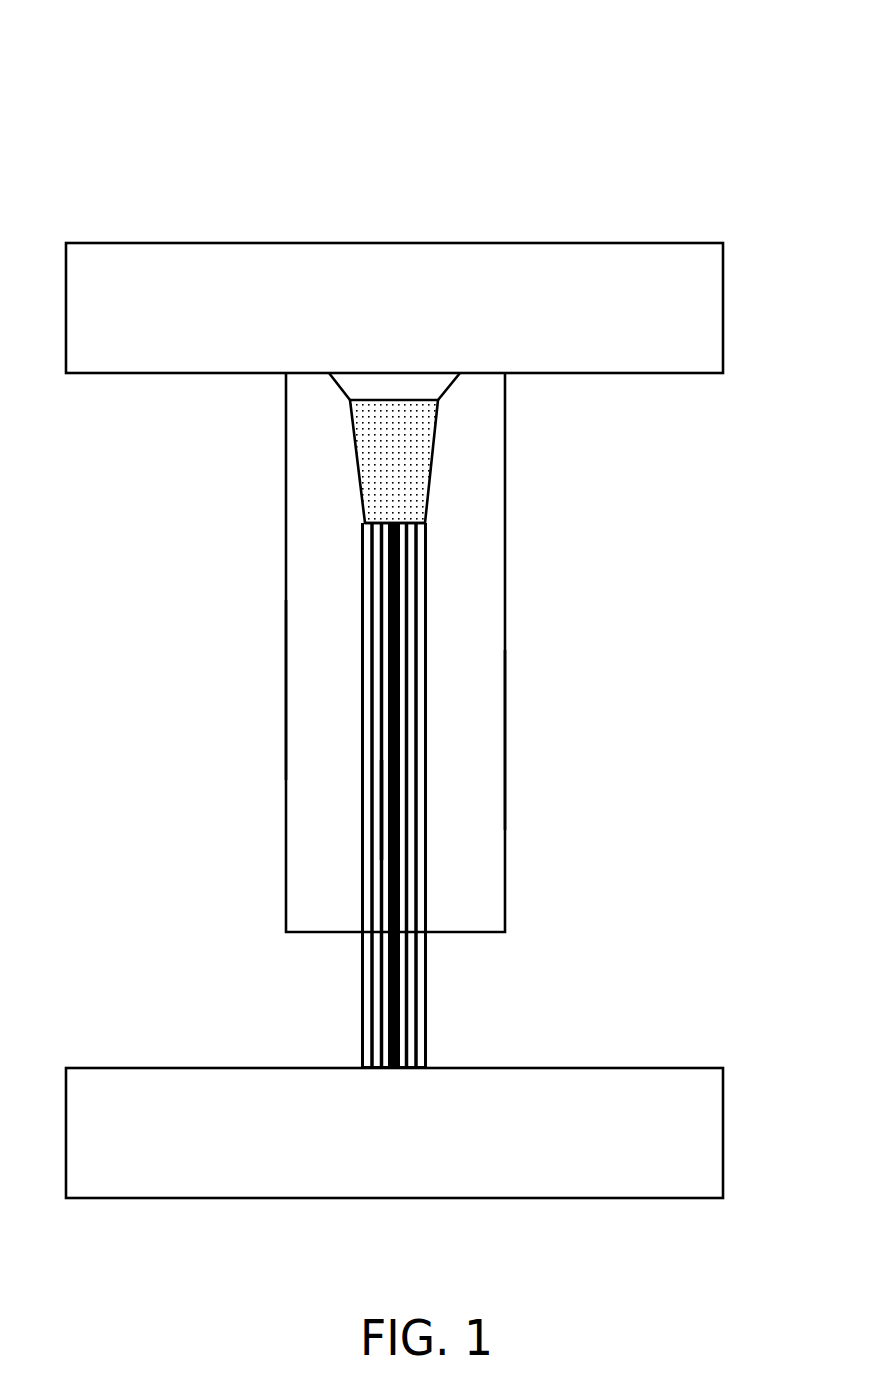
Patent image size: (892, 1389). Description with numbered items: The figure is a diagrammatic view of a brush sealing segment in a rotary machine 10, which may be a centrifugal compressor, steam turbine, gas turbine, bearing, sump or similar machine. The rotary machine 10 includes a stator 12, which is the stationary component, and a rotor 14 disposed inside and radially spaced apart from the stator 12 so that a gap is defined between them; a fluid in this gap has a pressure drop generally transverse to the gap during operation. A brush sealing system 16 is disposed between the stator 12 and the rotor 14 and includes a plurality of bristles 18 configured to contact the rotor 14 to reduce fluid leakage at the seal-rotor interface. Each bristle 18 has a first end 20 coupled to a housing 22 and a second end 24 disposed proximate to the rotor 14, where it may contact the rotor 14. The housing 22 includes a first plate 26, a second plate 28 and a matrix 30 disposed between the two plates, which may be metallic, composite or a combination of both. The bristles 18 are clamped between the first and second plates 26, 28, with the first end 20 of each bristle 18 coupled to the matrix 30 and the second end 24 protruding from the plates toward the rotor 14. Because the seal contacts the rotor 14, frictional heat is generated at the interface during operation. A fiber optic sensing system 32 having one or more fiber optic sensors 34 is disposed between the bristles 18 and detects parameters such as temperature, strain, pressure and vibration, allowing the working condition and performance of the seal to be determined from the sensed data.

The rotary machine 10 is at (677, 73).
The stator 12 is at (710, 279).
The rotor 14 is at (710, 1114).
The brush sealing system 16 is at (158, 557).
The bristles 18 is at (408, 618).
The first end 20 is at (420, 522).
The housing 22 is at (285, 523).
The second end 24 is at (398, 1062).
The first plate 26 is at (297, 687).
The second plate 28 is at (495, 737).
The matrix 30 is at (417, 480).
The fiber optic sensing system 32 is at (402, 885).
The fiber optic sensors 34 is at (392, 812).